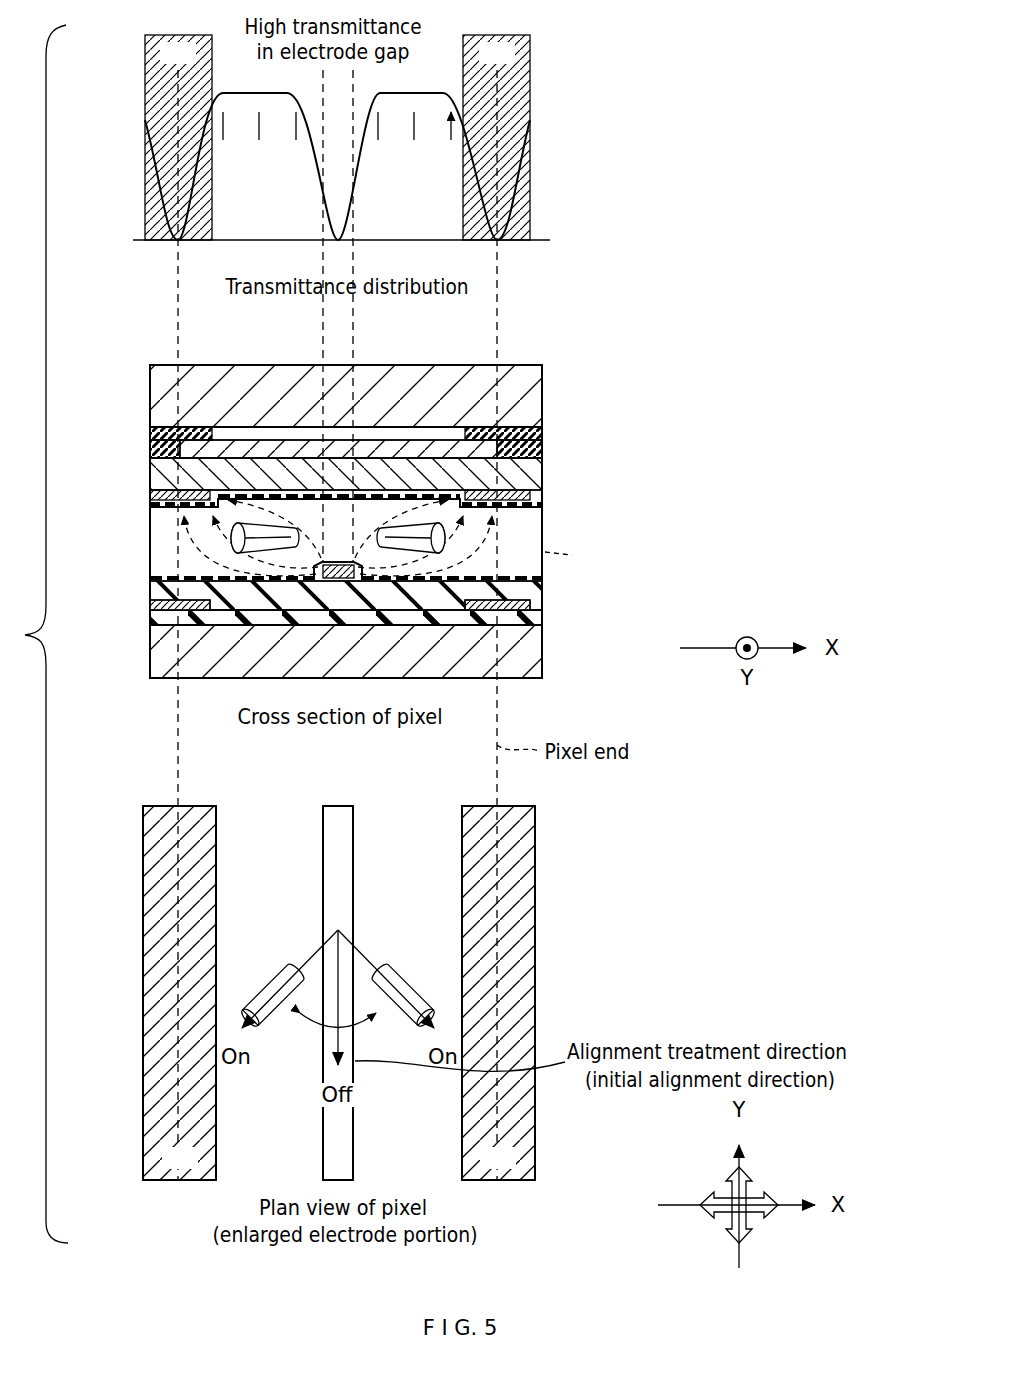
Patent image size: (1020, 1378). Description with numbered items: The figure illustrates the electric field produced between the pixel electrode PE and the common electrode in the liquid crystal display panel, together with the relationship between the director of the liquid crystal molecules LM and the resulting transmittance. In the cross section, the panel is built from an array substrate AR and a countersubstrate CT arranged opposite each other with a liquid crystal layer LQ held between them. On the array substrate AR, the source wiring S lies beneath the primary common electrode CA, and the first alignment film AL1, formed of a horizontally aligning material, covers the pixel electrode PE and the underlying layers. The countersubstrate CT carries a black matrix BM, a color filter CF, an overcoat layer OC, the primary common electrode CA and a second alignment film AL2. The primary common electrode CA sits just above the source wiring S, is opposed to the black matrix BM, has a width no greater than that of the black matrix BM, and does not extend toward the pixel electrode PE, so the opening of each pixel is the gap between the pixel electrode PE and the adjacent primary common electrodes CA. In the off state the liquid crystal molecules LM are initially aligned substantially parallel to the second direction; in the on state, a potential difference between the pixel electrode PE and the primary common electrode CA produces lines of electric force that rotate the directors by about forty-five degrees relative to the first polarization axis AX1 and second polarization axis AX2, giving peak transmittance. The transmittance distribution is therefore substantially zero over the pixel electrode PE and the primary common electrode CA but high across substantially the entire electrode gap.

The countersubstrate CT is at (548, 364).
The black matrix BM is at (577, 418).
The color filter CF is at (542, 450).
The overcoat layer OC is at (542, 478).
The primary common electrode CA is at (150, 498).
The second alignment film AL2 is at (525, 508).
The liquid crystal molecules LM is at (232, 540).
The liquid crystal layer LQ is at (160, 560).
The first alignment film AL1 is at (542, 583).
The source wiring S is at (150, 606).
The pixel electrode PE is at (327, 582).
The array substrate AR is at (550, 684).
The first polarization axis AX1 is at (761, 1194).
The second polarization axis AX2 is at (745, 1240).